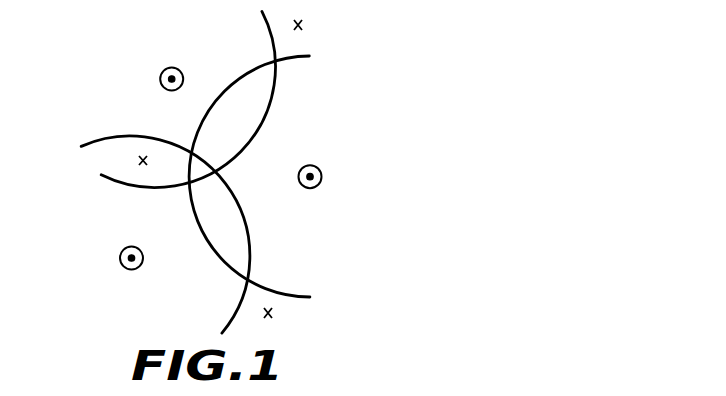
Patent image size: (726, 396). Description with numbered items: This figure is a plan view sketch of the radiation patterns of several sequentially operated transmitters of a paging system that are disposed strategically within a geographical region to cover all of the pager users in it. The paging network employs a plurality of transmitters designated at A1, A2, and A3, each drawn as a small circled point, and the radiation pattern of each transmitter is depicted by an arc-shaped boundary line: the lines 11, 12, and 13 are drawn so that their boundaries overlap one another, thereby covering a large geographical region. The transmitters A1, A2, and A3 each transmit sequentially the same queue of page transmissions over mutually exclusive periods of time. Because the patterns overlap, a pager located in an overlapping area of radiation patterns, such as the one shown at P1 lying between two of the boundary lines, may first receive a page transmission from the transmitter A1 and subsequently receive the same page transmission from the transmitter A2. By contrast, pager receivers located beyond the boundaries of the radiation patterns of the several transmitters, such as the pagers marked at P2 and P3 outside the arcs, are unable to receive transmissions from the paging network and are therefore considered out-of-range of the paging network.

The radiation pattern boundary 11 is at (241, 300).
The radiation pattern boundary 12 is at (275, 108).
The radiation pattern boundary 13 is at (202, 125).
The transmitter A1 is at (131, 248).
The transmitter A2 is at (171, 67).
The transmitter A3 is at (309, 164).
The pager location in overlapping area P1 is at (137, 161).
The out-of-range pager location P2 is at (304, 24).
The out-of-range pager location P3 is at (275, 313).